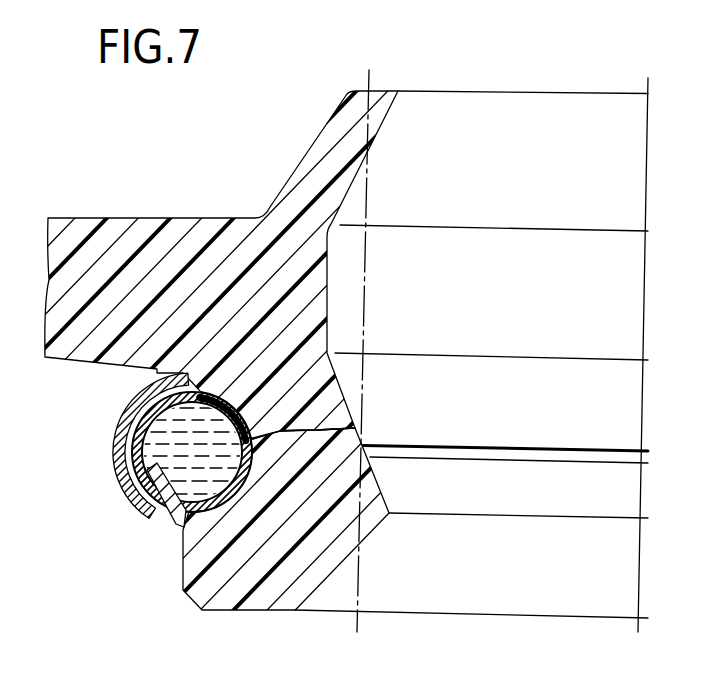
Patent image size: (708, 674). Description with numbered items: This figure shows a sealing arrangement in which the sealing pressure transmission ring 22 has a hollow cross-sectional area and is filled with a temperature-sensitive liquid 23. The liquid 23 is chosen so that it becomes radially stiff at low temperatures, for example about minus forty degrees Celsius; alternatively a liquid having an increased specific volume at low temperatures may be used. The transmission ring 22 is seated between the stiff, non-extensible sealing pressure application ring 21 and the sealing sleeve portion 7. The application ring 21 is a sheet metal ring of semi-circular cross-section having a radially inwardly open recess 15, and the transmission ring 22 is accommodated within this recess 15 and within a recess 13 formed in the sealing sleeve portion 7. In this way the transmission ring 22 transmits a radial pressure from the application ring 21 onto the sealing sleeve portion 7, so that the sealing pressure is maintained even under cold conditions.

The sealing sleeve portion 7 is at (237, 557).
The recess 13 is at (356, 429).
The radially inwardly open recess 15 is at (130, 413).
The sealing pressure application ring 21 is at (120, 468).
The sealing pressure transmission ring 22 is at (150, 510).
The temperature-sensitive liquid 23 is at (165, 466).